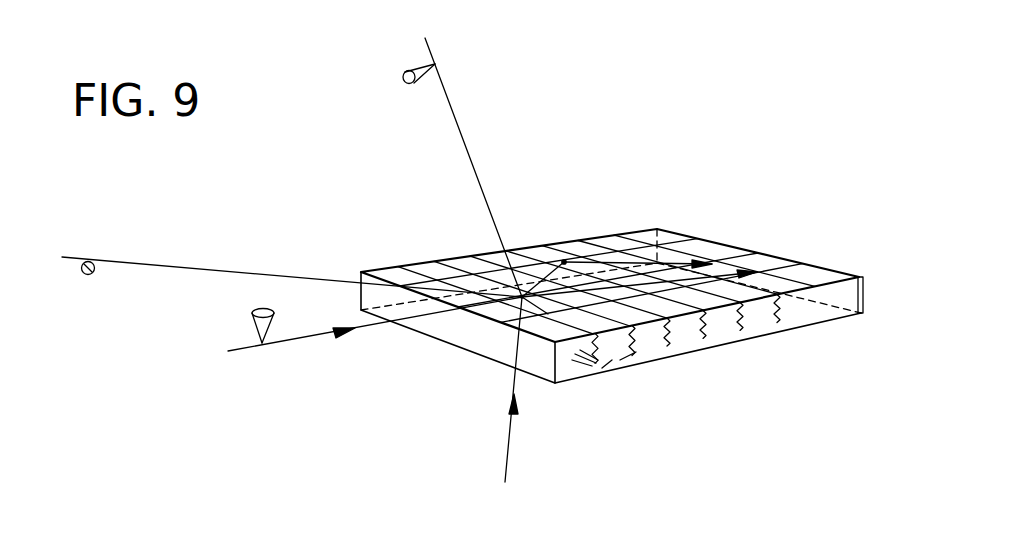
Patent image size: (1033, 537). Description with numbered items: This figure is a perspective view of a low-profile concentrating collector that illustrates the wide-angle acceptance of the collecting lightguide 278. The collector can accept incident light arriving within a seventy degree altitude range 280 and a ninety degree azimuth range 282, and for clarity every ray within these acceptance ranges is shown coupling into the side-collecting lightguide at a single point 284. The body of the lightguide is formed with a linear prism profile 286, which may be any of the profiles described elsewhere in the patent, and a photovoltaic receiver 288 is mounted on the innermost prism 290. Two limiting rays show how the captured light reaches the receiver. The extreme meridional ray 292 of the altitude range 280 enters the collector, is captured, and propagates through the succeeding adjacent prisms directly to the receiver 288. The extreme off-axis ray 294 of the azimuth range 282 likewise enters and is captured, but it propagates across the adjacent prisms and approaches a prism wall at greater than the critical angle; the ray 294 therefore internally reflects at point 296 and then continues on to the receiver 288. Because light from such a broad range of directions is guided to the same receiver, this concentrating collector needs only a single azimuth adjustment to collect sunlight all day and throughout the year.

The collecting lightguide 278 is at (732, 381).
The altitude range 280 is at (403, 80).
The azimuth range 282 is at (468, 455).
The point 284 is at (523, 296).
The linear prism profile 286 is at (602, 362).
The photovoltaic receiver 288 is at (863, 297).
The innermost prism 290 is at (805, 316).
The extreme meridional ray 292 is at (355, 363).
The extreme off-axis ray 294 is at (502, 410).
The point 296 is at (564, 262).